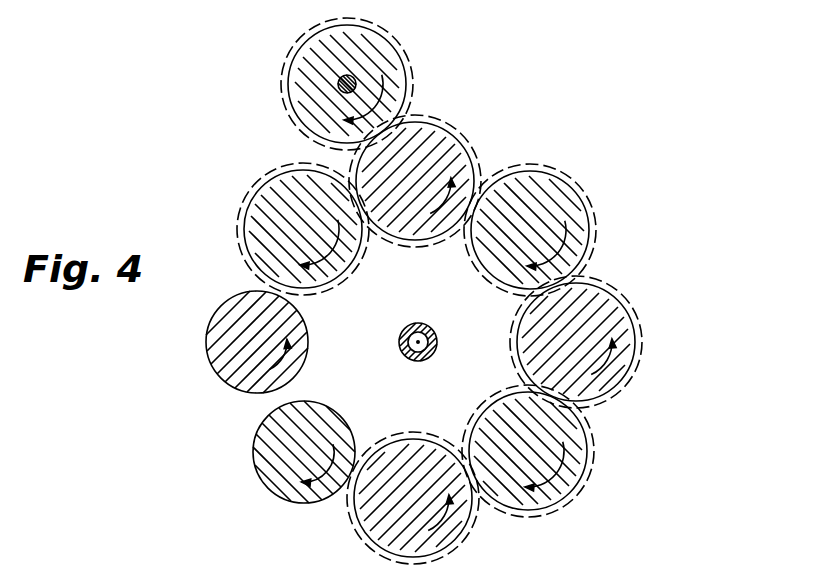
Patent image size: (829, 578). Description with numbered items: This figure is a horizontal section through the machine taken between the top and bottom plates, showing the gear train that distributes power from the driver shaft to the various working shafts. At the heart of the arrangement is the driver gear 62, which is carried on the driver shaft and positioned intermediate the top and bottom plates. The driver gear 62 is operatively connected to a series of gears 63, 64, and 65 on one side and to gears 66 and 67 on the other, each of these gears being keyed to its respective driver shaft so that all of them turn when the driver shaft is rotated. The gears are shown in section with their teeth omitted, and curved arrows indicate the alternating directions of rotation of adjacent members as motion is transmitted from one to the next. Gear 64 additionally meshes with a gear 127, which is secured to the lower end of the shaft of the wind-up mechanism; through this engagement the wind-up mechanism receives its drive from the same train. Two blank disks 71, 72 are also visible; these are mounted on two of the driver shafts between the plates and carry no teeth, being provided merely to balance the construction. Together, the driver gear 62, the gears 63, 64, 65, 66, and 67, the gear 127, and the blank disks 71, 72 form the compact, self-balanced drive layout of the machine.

The gear 127 is at (385, 75).
The gear 64 is at (462, 163).
The gear 65 is at (278, 192).
The gear 63 is at (578, 230).
The driver gear 62 is at (620, 342).
The gear 66 is at (582, 452).
The gear 67 is at (450, 527).
The blank disk 71 is at (227, 352).
The blank disk 72 is at (273, 448).